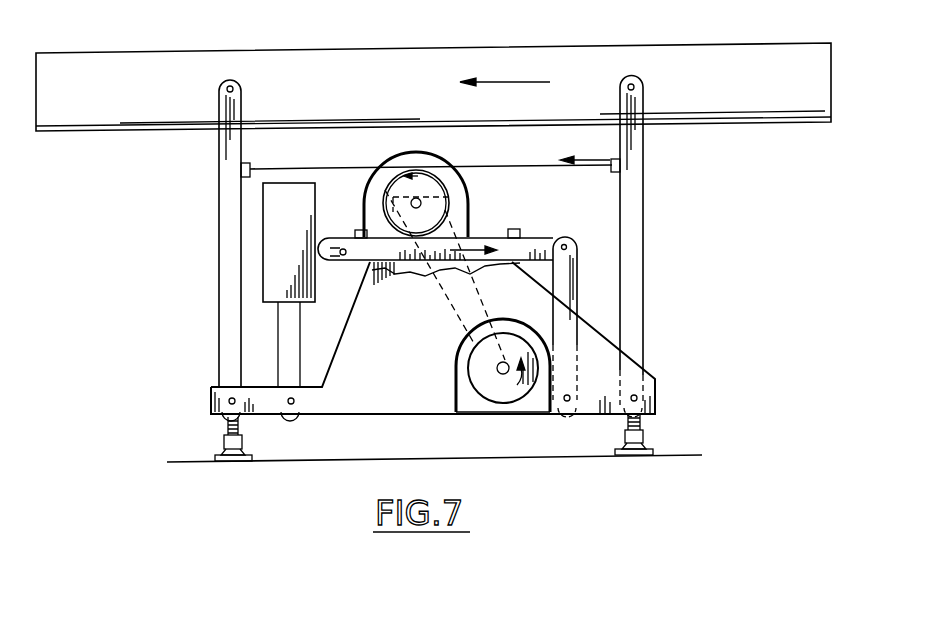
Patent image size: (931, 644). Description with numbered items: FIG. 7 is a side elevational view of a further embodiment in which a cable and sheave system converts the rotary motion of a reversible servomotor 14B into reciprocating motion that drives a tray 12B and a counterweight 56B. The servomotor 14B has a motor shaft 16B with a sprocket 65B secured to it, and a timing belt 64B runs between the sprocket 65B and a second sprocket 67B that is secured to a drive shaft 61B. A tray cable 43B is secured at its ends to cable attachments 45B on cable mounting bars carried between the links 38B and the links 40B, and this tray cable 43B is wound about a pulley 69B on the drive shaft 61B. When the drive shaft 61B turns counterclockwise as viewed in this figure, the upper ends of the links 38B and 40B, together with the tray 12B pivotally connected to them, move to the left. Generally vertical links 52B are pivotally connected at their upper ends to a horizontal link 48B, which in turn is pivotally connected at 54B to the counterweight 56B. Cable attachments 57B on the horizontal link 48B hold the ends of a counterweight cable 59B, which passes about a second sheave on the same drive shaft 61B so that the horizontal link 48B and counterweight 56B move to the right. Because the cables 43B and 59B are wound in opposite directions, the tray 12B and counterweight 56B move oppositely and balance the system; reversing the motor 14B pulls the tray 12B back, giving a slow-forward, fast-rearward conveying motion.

The tray 12B is at (558, 63).
The servomotor 14B is at (473, 398).
The motor shaft 16B is at (498, 362).
The links 38B is at (231, 262).
The links 40B is at (634, 200).
The tray cable 43B is at (267, 173).
The cable attachments 45B is at (241, 165).
The horizontal link 48B is at (527, 244).
The vertical links 52B is at (570, 297).
The pivotal connection 54B is at (334, 262).
The counterweight 56B is at (311, 214).
The cable attachments 57B is at (355, 232).
The counterweight cable 59B is at (380, 167).
The drive shaft 61B is at (420, 203).
The timing belt 64B is at (430, 300).
The sprocket 65B is at (468, 352).
The sprocket 67B is at (412, 153).
The pulley 69B is at (455, 175).